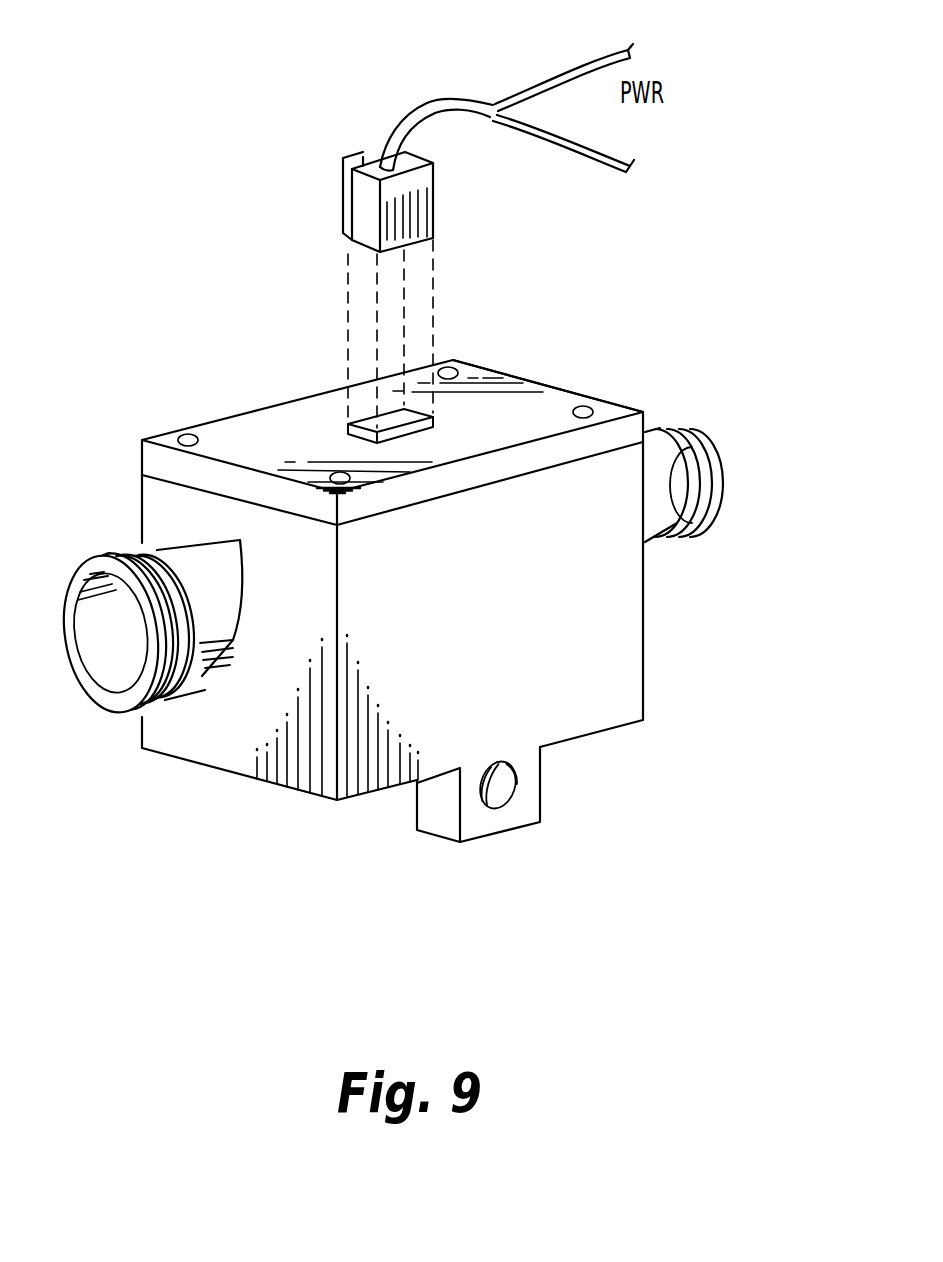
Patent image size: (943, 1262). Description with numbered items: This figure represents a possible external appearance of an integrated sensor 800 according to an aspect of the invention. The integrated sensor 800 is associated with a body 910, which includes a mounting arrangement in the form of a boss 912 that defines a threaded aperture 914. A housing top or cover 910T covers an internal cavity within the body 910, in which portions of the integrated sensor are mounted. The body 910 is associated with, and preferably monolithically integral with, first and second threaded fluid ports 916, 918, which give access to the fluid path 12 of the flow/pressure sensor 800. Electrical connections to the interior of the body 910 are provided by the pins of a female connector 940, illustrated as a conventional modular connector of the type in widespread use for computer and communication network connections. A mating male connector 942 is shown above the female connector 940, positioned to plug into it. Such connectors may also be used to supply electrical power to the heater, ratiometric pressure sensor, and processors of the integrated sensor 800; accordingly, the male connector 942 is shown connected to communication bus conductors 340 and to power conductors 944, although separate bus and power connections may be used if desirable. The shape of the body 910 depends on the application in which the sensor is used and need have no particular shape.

The fluid path 12 is at (103, 624).
The communication bus conductors 340 is at (627, 172).
The integrated sensor 800 is at (463, 945).
The body 910 is at (646, 645).
The housing top or cover 910T is at (558, 398).
The boss 912 is at (542, 790).
The threaded aperture 914 is at (505, 810).
The first threaded fluid port 916 is at (103, 558).
The second threaded fluid port 918 is at (708, 452).
The female connector 940 is at (434, 421).
The male connector 942 is at (438, 199).
The power conductors 944 is at (598, 62).